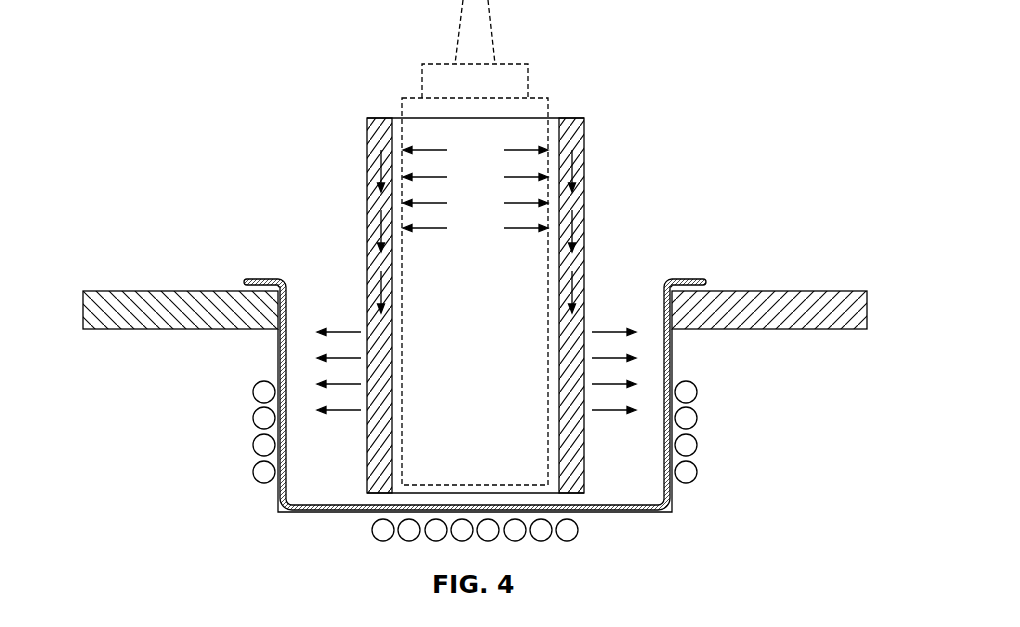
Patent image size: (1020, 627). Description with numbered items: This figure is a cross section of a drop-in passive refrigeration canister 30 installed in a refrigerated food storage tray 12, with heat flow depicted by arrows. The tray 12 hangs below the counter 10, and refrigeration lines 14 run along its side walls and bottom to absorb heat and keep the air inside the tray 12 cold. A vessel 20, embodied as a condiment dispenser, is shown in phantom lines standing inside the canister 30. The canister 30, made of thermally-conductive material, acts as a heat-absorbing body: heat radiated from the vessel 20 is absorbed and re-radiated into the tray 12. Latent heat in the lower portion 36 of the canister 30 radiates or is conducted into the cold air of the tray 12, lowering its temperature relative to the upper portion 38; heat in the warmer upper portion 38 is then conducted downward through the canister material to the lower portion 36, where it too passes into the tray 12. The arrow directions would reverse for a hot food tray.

The counter 10 is at (792, 291).
The food storage tray 12 is at (678, 278).
The refrigeration lines 14 is at (254, 418).
The vessel 20 is at (541, 97).
The canister 30 is at (578, 120).
The lower portion of the canister 36 is at (345, 451).
The upper portion of the canister 38 is at (587, 190).